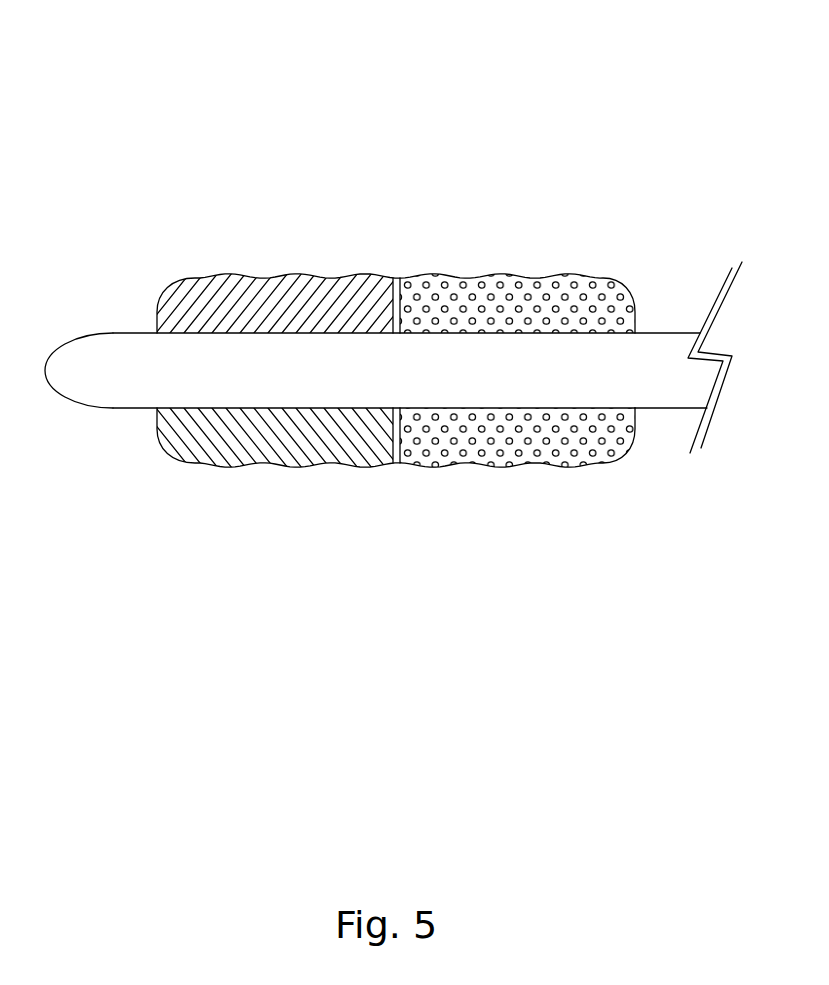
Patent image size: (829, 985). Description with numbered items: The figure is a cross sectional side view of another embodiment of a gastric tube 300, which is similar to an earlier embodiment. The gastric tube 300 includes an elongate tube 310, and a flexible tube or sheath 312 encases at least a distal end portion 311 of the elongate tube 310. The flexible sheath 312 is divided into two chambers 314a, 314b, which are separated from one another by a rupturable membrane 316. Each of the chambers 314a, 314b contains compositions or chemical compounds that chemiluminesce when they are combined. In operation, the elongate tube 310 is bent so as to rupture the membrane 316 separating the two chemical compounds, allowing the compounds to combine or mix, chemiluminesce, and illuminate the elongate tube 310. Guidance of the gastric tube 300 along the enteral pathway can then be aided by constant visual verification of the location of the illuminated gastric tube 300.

The gastric tube 300 is at (397, 152).
The elongate tube 310 is at (675, 323).
The distal end portion 311 is at (657, 368).
The flexible sheath 312 is at (218, 267).
The chamber 314a is at (532, 292).
The chamber 314b is at (311, 292).
The rupturable membrane 316 is at (398, 428).